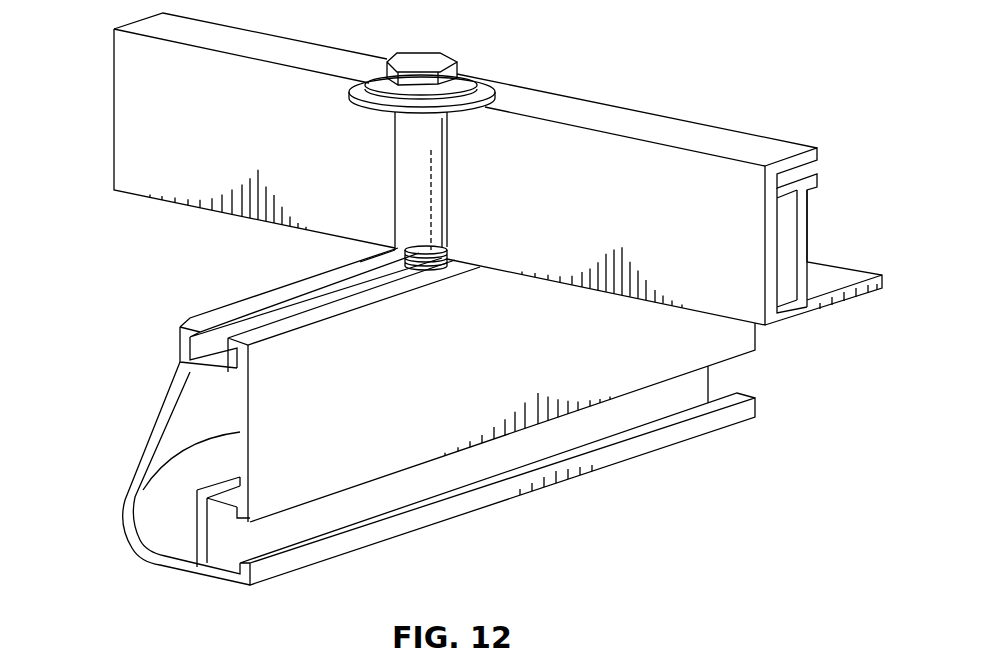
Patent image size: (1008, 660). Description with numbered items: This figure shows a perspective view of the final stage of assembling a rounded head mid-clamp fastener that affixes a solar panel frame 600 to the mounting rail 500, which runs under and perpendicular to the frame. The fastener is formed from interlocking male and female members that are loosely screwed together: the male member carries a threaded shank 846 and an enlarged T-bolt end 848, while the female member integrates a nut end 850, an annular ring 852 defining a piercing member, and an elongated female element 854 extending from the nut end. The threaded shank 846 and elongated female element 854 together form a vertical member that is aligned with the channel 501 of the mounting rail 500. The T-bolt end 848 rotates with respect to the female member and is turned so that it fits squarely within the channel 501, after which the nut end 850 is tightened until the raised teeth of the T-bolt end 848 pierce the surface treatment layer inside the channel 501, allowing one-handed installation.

The solar panel frame 600 is at (637, 199).
The mounting rail 500 is at (525, 359).
The channel 501 is at (143, 490).
The nut end 850 is at (424, 47).
The annular ring 852 is at (495, 78).
The elongated female element 854 is at (433, 184).
The threaded shank 846 is at (445, 253).
The T-bolt end 848 is at (388, 272).